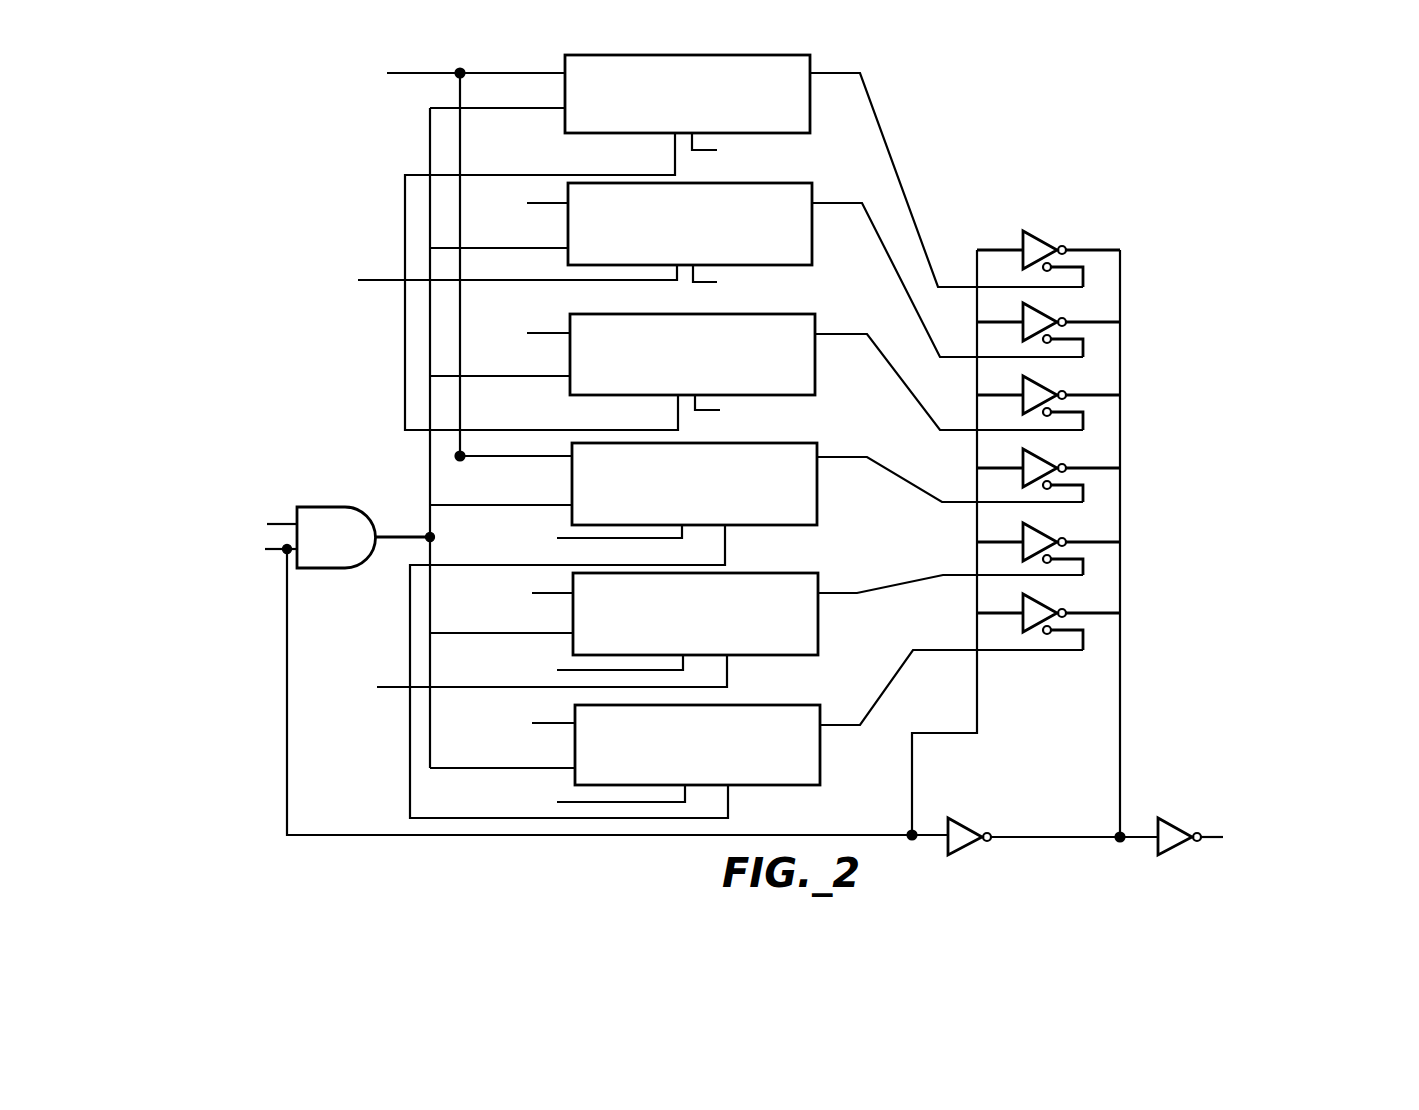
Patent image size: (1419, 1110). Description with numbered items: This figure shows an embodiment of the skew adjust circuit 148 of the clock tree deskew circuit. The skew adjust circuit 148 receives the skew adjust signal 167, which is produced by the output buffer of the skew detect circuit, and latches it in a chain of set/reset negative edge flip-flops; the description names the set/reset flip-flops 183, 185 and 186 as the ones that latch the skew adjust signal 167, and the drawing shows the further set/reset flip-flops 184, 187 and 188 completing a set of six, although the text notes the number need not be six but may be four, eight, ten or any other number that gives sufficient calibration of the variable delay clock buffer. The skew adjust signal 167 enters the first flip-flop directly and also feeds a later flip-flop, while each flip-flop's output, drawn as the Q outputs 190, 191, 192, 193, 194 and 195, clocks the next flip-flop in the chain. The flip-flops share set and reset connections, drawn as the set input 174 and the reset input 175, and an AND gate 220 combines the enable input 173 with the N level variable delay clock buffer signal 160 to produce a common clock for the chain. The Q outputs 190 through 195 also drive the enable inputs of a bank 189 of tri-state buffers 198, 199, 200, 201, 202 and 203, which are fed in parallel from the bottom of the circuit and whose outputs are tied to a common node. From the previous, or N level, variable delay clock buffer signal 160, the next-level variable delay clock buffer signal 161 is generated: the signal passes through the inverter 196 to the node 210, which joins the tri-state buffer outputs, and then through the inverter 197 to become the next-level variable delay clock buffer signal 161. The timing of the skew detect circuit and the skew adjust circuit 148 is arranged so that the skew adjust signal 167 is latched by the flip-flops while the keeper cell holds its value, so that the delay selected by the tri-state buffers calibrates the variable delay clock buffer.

The skew adjust circuit 148 is at (1119, 133).
The N level variable delay clock buffer signal 160 is at (285, 555).
The N+1 level variable delay clock buffer signal 161 is at (1217, 835).
The skew adjust signal 167 is at (415, 78).
The enable signal 173 is at (278, 520).
The set signal 174 is at (393, 286).
The reset signal 175 is at (405, 686).
The set/reset flip-flop 183 is at (640, 137).
The set/reset negative edge flip flop 2 184 is at (645, 268).
The set/reset flip-flop 185 is at (647, 398).
The set/reset flip-flop 186 is at (647, 528).
The set/reset negative edge flip flop 5 187 is at (810, 658).
The set/reset negative edge flip flop 6 188 is at (810, 790).
The tri-state buffer bank 189 is at (1154, 494).
The Q1 output 190 is at (820, 78).
The Q2 output 191 is at (822, 208).
The Q3 output 192 is at (825, 340).
The Q4 output 193 is at (825, 463).
The Q5 output 194 is at (830, 598).
The Q6 output 195 is at (830, 729).
The inverter 196 is at (970, 848).
The inverter 197 is at (1175, 848).
The tri-state buffer 198 is at (1035, 237).
The tri-state buffer 199 is at (1035, 310).
The tri-state buffer 200 is at (1035, 383).
The tri-state buffer 201 is at (1035, 455).
The tri-state buffer 202 is at (1035, 528).
The tri-state buffer 203 is at (1035, 601).
The inverter output node 210 is at (1072, 835).
The AND gate 220 is at (348, 507).